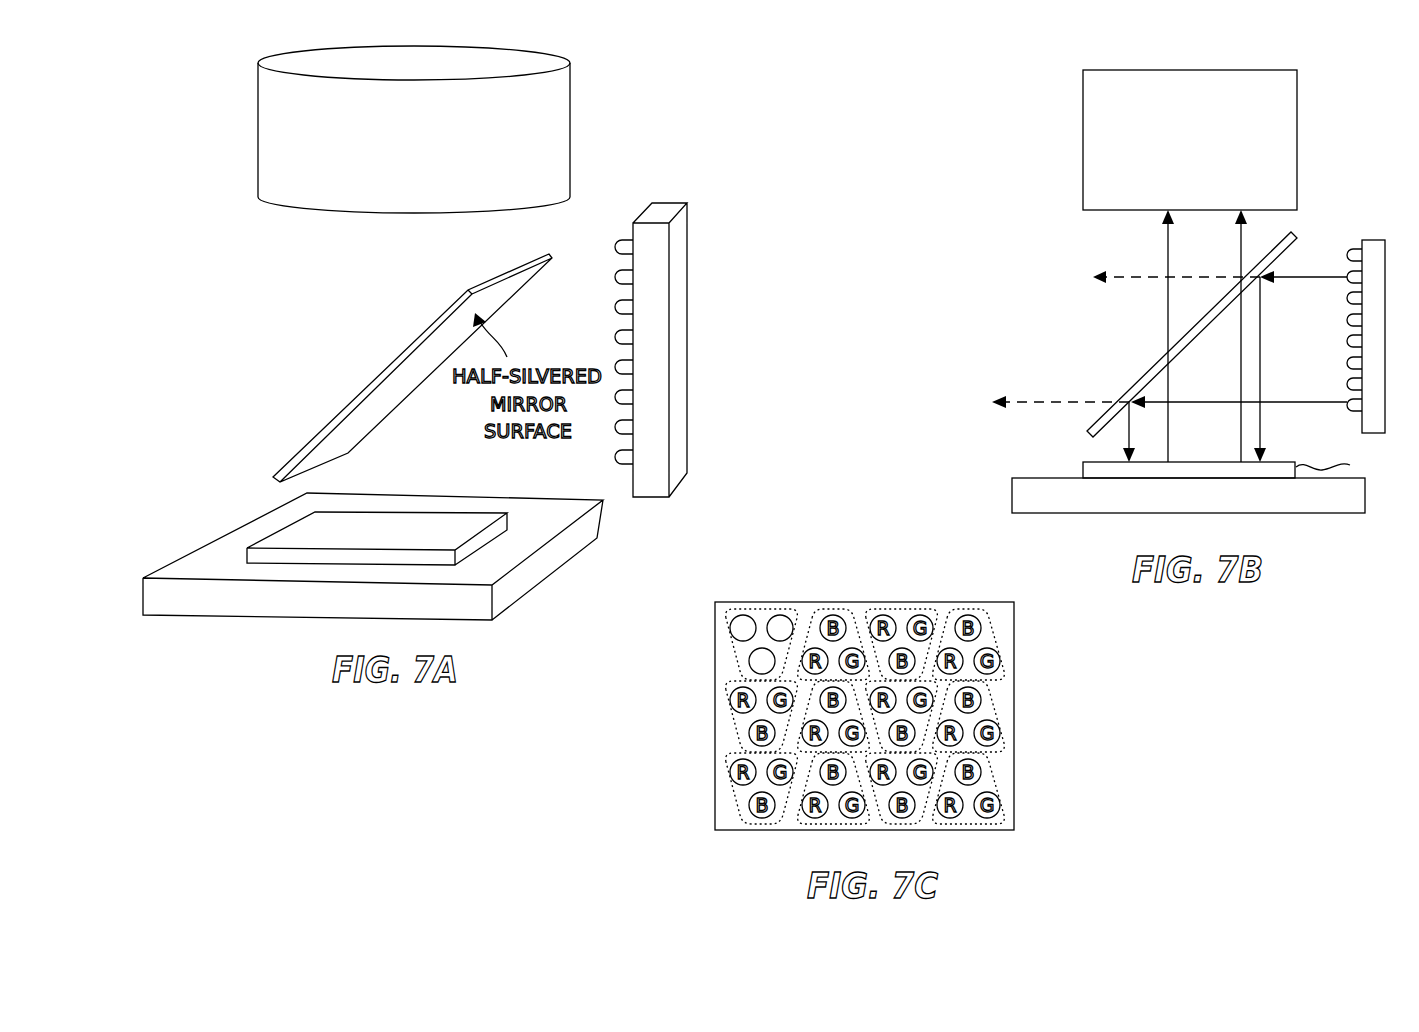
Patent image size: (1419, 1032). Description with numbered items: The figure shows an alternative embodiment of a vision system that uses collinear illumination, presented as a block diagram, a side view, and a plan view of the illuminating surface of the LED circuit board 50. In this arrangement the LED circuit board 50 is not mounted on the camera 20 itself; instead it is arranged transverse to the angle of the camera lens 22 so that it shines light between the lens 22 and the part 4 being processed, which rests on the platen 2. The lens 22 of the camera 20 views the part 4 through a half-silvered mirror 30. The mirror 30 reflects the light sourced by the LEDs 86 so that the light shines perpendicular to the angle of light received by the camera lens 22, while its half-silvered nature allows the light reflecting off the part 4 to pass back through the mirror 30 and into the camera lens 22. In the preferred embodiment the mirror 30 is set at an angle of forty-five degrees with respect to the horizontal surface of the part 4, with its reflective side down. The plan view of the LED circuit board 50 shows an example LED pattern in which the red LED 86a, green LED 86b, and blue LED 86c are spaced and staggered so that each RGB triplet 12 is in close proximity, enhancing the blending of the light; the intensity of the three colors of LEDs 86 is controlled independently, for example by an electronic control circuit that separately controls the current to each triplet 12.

In FIG. 7A, the platen 2 is at (192, 553).
In FIG. 7B, the platen 2 is at (1048, 476).
In FIG. 7A, the part 4 is at (285, 527).
In FIG. 7C, the triplet of LEDs 12 is at (761, 619).
In FIG. 7A, the camera 20 is at (258, 130).
In FIG. 7B, the camera 20 is at (1083, 138).
In FIG. 7A, the camera lens 22 is at (388, 218).
In FIG. 7A, the half-silvered mirror 30 is at (368, 383).
In FIG. 7B, the half-silvered mirror 30 is at (1148, 369).
In FIG. 7A, the LED circuit board 50 is at (670, 202).
In FIG. 7B, the LED circuit board 50 is at (1362, 240).
In FIG. 7C, the LED circuit board 50 is at (717, 700).
In FIG. 7A, the LEDs 86 is at (615, 228).
In FIG. 7C, the red LED 86a is at (730, 617).
In FIG. 7C, the green LED 86b is at (770, 617).
In FIG. 7C, the blue LED 86c is at (746, 652).